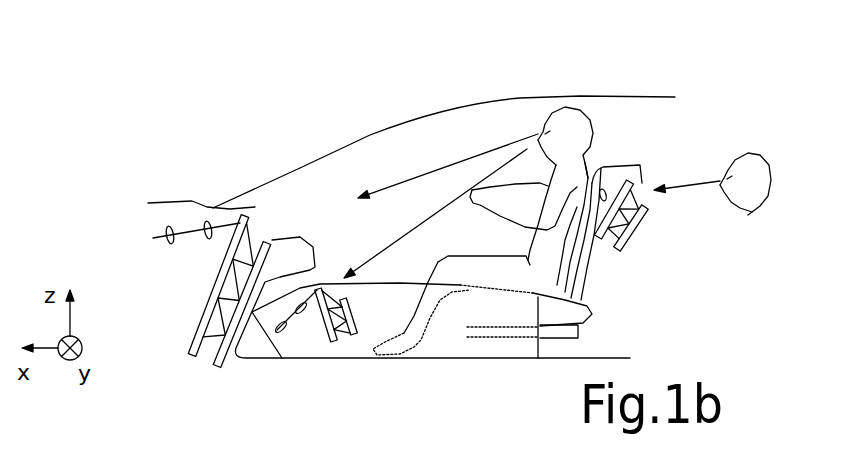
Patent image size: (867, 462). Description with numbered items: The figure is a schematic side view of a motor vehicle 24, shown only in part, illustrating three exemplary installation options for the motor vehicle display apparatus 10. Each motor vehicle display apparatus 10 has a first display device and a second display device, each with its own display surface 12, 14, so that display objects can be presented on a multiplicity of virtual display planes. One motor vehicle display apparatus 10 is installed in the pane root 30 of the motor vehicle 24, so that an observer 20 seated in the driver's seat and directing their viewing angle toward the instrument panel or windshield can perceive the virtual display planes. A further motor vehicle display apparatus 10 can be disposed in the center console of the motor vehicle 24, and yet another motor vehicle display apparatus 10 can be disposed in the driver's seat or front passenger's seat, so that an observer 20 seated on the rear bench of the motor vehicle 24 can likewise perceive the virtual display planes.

The motor vehicle display apparatus 10 is at (430, 276).
The display surface 12 is at (190, 352).
The display surface 14 is at (218, 367).
The observer 20 is at (585, 98).
The motor vehicle 24 is at (403, 148).
The pane root 30 is at (215, 207).